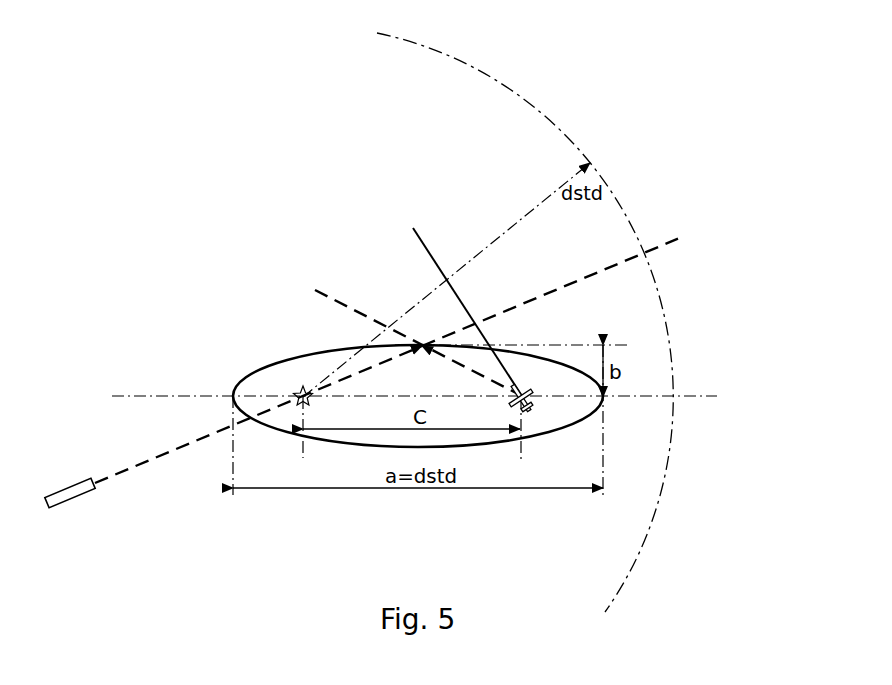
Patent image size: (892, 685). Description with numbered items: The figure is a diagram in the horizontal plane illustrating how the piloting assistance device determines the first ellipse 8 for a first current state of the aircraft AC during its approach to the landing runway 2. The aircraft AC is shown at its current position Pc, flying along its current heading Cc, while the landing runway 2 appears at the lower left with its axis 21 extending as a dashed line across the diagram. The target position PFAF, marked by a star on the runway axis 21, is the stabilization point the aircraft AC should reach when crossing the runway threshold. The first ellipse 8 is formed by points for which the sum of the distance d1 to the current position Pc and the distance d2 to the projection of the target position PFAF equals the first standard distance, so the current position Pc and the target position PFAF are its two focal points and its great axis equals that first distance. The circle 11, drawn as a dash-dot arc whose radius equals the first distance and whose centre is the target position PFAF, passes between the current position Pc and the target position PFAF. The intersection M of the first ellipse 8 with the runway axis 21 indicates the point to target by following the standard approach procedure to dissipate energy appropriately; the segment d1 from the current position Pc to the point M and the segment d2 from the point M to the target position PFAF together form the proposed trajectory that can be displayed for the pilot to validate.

The landing runway 2 is at (80, 498).
The first ellipse 8 is at (493, 446).
The circle 11 is at (502, 85).
The axis of the landing runway 21 is at (175, 451).
The point of intersection M is at (422, 333).
The target position PFAF is at (292, 384).
The aircraft AC is at (537, 380).
The current position Pc is at (550, 412).
The current heading Cc is at (428, 250).
The distance d1 (segment) d1 is at (473, 369).
The distance d2 (segment) d2 is at (372, 369).